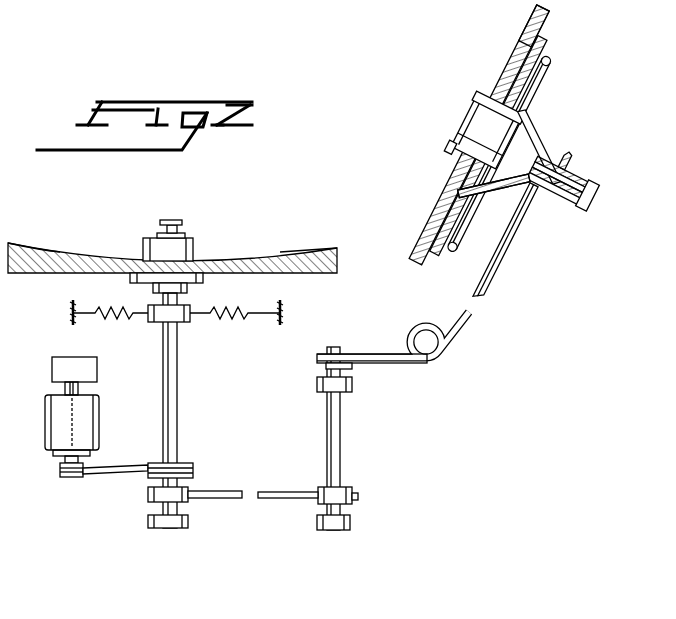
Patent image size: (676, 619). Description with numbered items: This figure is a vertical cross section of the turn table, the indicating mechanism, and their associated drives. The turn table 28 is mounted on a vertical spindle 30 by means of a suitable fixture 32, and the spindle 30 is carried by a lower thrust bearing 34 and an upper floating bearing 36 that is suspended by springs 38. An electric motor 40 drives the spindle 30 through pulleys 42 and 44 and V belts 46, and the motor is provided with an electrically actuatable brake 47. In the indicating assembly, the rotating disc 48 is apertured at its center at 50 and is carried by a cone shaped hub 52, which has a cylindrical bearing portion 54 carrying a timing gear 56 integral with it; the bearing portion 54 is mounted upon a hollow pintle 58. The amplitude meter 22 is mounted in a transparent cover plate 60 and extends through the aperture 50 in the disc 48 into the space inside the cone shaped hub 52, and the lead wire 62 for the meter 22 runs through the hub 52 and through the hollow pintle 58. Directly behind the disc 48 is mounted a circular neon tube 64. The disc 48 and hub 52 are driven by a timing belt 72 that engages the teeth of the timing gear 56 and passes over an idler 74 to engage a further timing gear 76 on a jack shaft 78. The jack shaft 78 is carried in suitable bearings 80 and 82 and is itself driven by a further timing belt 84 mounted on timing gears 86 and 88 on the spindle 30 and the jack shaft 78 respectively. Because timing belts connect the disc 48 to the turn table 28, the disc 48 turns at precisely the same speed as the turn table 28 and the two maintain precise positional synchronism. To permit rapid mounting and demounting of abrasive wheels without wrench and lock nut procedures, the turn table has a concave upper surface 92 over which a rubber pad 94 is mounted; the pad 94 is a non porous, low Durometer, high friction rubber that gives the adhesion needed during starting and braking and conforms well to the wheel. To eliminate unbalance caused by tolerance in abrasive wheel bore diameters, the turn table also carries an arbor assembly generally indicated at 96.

The amplitude meter 22 is at (462, 135).
The turn table 28 is at (340, 267).
The vertical spindle 30 is at (177, 392).
The fixture 32 is at (205, 280).
The lower thrust bearing 34 is at (172, 530).
The upper floating bearing 36 is at (155, 322).
The springs 38 is at (105, 312).
The electric motor 40 is at (52, 418).
The pulley 42 is at (75, 478).
The pulley 44 is at (185, 465).
The V belts 46 is at (120, 468).
The electrically actuatable brake 47 is at (60, 368).
The rotating disc 48 is at (549, 35).
The aperture 50 is at (520, 128).
The cone shaped hub 52 is at (548, 148).
The cylindrical bearing portion 54 is at (520, 193).
The timing gear 56 is at (552, 208).
The hollow pintle 58 is at (578, 183).
The transparent cover plate 60 is at (535, 33).
The lead wire 62 is at (592, 200).
The circular neon tube 64 is at (557, 78).
The timing belt 72 is at (500, 282).
The idler 74 is at (432, 325).
The timing gear 76 is at (348, 354).
The jack shaft 78 is at (341, 440).
The bearing 80 is at (350, 522).
The bearing 82 is at (352, 384).
The timing belt 84 is at (287, 498).
The timing gear 86 is at (150, 493).
The timing gear 88 is at (350, 490).
The concave upper surface 92 is at (50, 247).
The rubber pad 94 is at (262, 252).
The arbor assembly 96 is at (187, 222).